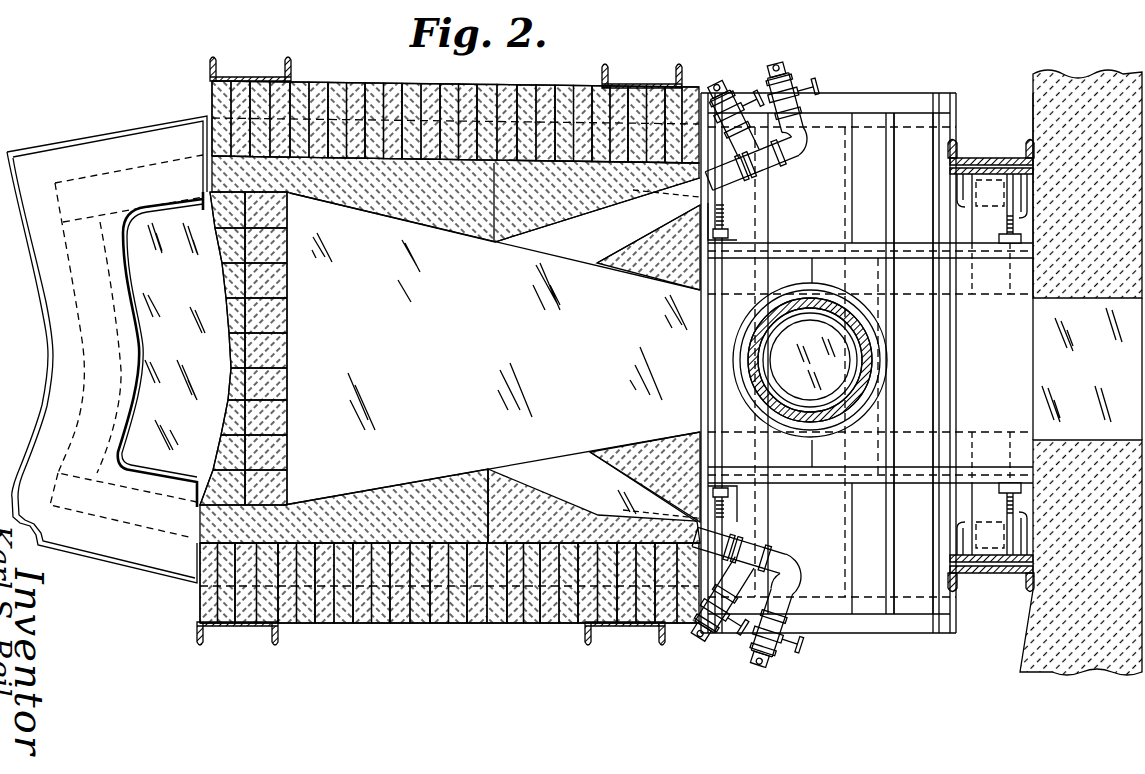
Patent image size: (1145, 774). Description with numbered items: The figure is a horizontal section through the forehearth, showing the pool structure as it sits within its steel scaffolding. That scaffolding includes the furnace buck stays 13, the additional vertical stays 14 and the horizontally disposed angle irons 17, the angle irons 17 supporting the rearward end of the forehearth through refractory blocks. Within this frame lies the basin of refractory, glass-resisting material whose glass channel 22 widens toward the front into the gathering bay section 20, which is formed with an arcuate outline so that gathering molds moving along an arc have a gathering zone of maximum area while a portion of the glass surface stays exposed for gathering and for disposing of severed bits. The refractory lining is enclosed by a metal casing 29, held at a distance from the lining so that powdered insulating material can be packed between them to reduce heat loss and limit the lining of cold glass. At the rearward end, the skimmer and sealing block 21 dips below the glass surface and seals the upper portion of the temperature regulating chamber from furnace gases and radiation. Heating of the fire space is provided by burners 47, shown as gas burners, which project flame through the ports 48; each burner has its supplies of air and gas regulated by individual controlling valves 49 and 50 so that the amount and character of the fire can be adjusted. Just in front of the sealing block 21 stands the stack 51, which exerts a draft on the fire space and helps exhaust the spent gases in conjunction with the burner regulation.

The furnace buck stays 13 is at (989, 158).
The additional vertical stays 14 is at (246, 80).
The horizontally disposed angle irons 17 is at (996, 372).
The gathering bay section 20 is at (161, 349).
The skimmer and sealing block 21 is at (908, 270).
The glass channel 22 is at (492, 353).
The metal casing 29 is at (47, 300).
The burners 47 is at (725, 181).
The ports 48 is at (589, 254).
The controlling valve 49 is at (739, 106).
The controlling valve 50 is at (794, 90).
The stack 51 is at (810, 360).